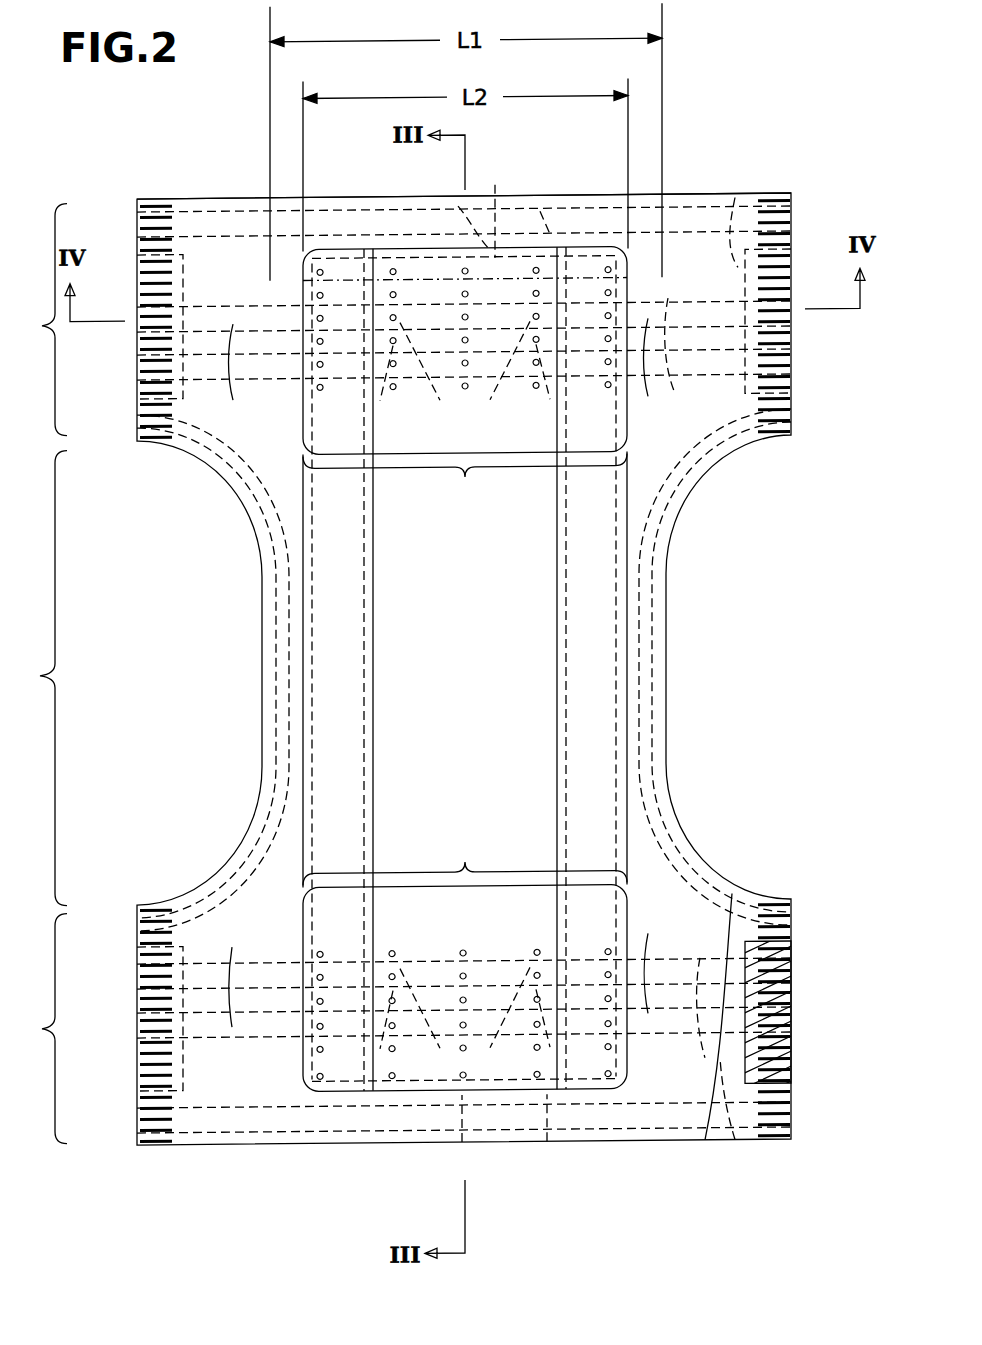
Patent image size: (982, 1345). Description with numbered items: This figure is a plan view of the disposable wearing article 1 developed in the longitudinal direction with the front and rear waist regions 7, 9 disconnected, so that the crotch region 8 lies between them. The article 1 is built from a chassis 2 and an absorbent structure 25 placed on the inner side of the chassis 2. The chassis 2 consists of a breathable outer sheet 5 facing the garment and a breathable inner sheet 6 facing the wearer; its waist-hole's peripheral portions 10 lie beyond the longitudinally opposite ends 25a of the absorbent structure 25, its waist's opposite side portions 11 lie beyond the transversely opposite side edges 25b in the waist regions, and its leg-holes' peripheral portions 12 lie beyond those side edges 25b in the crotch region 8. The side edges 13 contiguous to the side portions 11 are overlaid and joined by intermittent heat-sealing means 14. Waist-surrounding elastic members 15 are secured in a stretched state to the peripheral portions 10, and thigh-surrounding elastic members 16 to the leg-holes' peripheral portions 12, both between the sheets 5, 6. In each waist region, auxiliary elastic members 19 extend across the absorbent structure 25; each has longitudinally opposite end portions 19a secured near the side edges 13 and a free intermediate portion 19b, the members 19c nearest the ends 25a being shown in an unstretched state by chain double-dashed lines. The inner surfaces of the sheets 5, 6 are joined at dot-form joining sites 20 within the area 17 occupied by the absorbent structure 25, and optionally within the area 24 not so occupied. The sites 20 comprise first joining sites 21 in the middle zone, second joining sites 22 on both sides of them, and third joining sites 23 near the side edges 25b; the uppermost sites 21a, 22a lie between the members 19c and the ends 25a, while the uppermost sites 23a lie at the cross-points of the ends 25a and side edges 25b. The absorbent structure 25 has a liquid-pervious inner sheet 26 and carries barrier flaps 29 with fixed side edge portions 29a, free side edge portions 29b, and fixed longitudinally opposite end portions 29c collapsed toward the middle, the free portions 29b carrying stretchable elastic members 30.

The article 1 is at (170, 182).
The chassis 2 is at (790, 196).
The outer sheet 5 is at (742, 902).
The inner sheet 6 is at (665, 875).
The front waist region 7 is at (41, 1029).
The crotch region 8 is at (41, 678).
The rear waist region 9 is at (41, 320).
The waist-hole's peripheral portions 10 is at (235, 212).
The waist's opposite side portions 11 is at (195, 250).
The leg-holes' peripheral portions 12 is at (258, 490).
The side edges 13 is at (138, 378).
The heat-sealing means 14 is at (165, 245).
The waist-surrounding elastic members 15 is at (735, 200).
The thigh-surrounding elastic members 16 is at (280, 790).
The area 17 is at (465, 668).
The auxiliary elastic members 19 is at (593, 607).
The longitudinally opposite end portions 19a is at (150, 300).
The intermediate portion 19b is at (500, 1160).
The auxiliary elastic members 19c is at (722, 205).
The joining sites 20 is at (315, 385).
The first joining sites 21 is at (460, 395).
The uppermost joining sites 21a is at (458, 206).
The second joining sites 22 is at (465, 685).
The uppermost joining sites 22a is at (566, 1165).
The third joining sites 23 is at (310, 320).
The uppermost joining sites 23a is at (300, 266).
The area 24 is at (445, 672).
The absorbent structure 25 is at (390, 640).
The longitudinally opposite ends 25a is at (360, 250).
The transversely opposite side edges 25b is at (268, 538).
The inner sheet 26 is at (540, 632).
The barrier flaps 29 is at (318, 716).
The fixed side edge portions 29a is at (313, 584).
The free side edge portions 29b is at (345, 520).
The fixed longitudinally opposite end portions 29c is at (332, 256).
The stretchable elastic members 30 is at (372, 728).